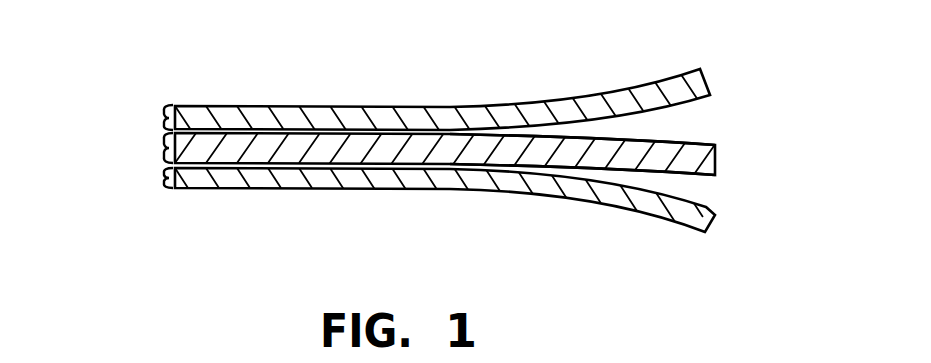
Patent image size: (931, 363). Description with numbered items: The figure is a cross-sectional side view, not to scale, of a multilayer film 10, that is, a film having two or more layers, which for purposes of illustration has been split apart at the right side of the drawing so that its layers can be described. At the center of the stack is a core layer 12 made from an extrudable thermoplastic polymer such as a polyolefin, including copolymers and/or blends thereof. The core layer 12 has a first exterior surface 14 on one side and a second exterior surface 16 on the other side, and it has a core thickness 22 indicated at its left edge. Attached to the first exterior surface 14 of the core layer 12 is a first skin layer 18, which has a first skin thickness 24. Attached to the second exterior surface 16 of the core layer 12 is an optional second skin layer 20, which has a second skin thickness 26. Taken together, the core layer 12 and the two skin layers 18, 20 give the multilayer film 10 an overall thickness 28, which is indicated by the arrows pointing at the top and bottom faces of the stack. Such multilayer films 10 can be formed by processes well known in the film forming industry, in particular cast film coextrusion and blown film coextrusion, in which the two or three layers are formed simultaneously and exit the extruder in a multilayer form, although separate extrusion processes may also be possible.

The multilayer film 10 is at (278, 66).
The core layer 12 is at (716, 162).
The first exterior surface 14 is at (687, 140).
The second exterior surface 16 is at (706, 177).
The first skin layer 18 is at (713, 77).
The second skin layer 20 is at (717, 223).
The core thickness 22 is at (160, 152).
The first skin thickness 24 is at (157, 118).
The second skin thickness 26 is at (158, 180).
The overall thickness 28 is at (403, 86).